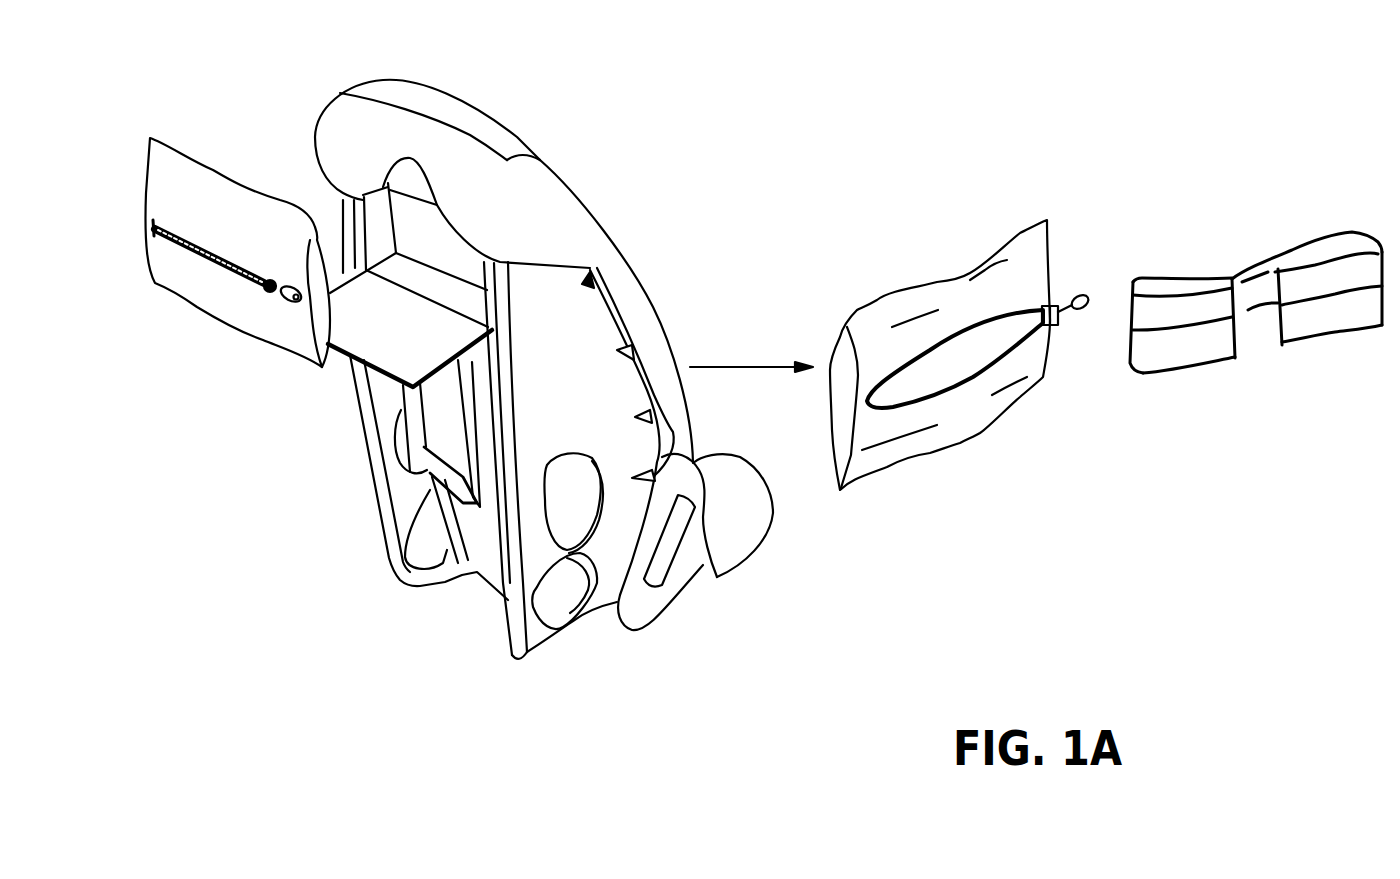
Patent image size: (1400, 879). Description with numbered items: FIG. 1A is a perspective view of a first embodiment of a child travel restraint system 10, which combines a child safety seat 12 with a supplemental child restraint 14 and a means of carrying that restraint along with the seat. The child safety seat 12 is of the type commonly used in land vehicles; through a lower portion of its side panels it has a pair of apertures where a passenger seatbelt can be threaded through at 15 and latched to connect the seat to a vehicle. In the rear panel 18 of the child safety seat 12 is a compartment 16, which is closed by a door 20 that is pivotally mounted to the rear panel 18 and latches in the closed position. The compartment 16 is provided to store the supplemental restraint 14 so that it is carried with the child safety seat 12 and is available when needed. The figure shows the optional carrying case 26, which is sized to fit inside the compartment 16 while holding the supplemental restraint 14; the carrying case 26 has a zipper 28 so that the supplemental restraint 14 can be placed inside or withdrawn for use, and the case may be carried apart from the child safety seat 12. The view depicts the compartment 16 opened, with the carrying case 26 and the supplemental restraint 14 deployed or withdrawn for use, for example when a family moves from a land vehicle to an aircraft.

The child travel restraint system 10 is at (358, 589).
The child safety seat 12 is at (537, 647).
The supplemental child restraint 14 is at (1303, 342).
The seatbelt threading location 15 is at (562, 598).
The compartment 16 is at (362, 204).
The rear panel 18 is at (443, 407).
The door 20 is at (365, 342).
The carrying case 26 is at (167, 160).
The zipper 28 is at (247, 277).